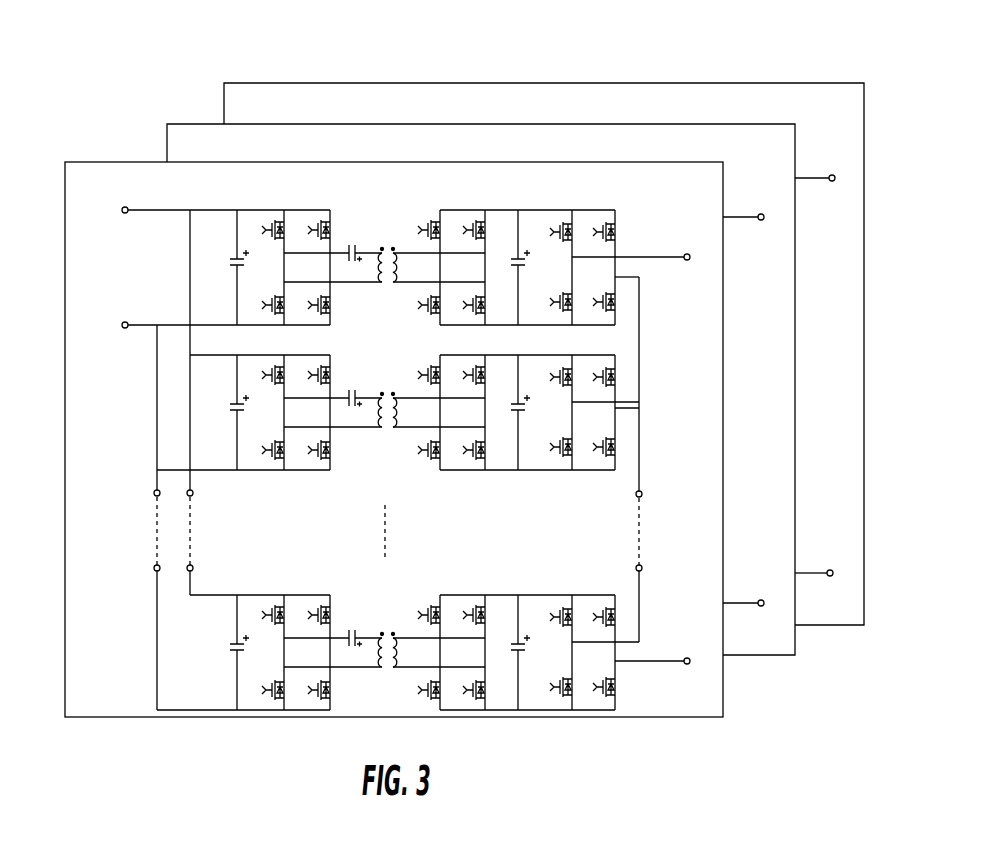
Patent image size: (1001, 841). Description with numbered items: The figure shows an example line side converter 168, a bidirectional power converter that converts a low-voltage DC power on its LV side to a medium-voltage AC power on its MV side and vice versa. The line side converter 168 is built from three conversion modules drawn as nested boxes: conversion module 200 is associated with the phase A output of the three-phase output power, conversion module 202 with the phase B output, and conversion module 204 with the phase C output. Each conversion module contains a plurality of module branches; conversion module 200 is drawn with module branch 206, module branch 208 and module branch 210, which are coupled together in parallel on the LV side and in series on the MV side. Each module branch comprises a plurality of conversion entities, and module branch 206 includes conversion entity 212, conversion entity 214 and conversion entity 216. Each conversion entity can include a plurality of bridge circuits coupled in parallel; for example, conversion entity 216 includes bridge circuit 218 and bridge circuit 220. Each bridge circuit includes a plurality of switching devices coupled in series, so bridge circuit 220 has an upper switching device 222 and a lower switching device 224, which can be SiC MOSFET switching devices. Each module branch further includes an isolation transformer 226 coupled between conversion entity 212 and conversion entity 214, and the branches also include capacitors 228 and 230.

The line side converter 168 is at (690, 45).
The conversion module 200 is at (65, 197).
The conversion module 202 is at (192, 123).
The conversion module 204 is at (258, 82).
The module branch 206 is at (200, 210).
The module branch 208 is at (215, 470).
The module branch 210 is at (215, 595).
The conversion entity 212 is at (329, 196).
The conversion entity 214 is at (489, 196).
The conversion entity 216 is at (619, 196).
The bridge circuit 218 is at (553, 258).
The bridge circuit 220 is at (615, 255).
The upper switching device 222 is at (615, 228).
The lower switching device 224 is at (617, 297).
The isolation transformer 226 is at (374, 289).
The capacitor 228 is at (231, 263).
The capacitor 230 is at (521, 270).